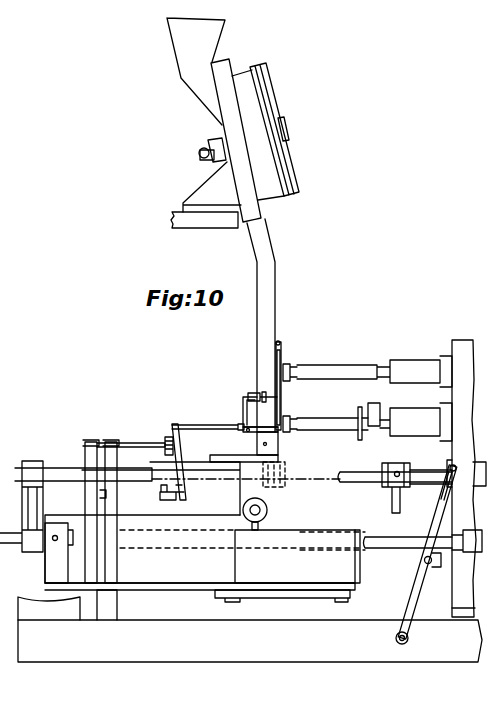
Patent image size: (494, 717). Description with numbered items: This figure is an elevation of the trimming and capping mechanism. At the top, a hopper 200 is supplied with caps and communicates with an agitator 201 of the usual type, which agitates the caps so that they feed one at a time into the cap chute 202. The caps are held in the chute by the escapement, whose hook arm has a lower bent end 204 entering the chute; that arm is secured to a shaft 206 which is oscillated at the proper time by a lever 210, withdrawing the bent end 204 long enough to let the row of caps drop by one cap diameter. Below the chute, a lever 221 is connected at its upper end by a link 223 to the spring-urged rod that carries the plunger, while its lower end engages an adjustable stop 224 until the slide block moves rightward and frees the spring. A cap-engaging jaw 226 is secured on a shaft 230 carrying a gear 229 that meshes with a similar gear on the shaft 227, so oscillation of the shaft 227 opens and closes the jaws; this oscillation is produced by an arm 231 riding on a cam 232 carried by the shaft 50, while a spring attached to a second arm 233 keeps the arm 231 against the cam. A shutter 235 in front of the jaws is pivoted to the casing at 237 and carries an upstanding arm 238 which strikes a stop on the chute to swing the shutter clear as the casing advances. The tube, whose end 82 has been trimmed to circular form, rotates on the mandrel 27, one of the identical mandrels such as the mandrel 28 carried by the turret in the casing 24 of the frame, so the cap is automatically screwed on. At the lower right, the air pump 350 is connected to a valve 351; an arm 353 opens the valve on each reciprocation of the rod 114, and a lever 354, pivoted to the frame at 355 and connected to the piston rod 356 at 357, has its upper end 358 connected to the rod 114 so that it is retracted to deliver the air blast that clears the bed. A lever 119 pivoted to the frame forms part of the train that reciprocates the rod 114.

The hopper 200 is at (228, 30).
The agitator 201 is at (270, 84).
The cap chute 202 is at (278, 247).
The lower bent end 204 is at (281, 405).
The shaft 206 is at (282, 344).
The lever 210 is at (281, 395).
The lever 221 is at (181, 450).
The link 223 is at (196, 425).
The adjustable stop 224 is at (160, 496).
The cap-engaging jaw 226 is at (272, 443).
The shaft 227 is at (90, 441).
The gear 229 is at (166, 437).
The shaft 230 is at (128, 436).
The arm 231 is at (84, 454).
The cam 232 is at (82, 505).
The second arm 233 is at (108, 451).
The shutter 235 is at (360, 412).
The pivot 237 is at (245, 432).
The upstanding arm 238 is at (243, 400).
The casing 24 is at (462, 340).
The mandrel 27 is at (392, 410).
The mandrel 28 is at (390, 361).
The shaft 50 is at (168, 548).
The end of the tube 82 is at (373, 483).
The rod 114 is at (424, 470).
The lever 119 is at (254, 598).
The air pump 350 is at (235, 565).
The valve 351 is at (243, 514).
The arm 353 is at (400, 497).
The lever 354 is at (438, 519).
The pivot 355 is at (394, 640).
The piston rod 356 is at (378, 550).
The connection 357 is at (436, 563).
The upper end of lever 358 is at (458, 462).